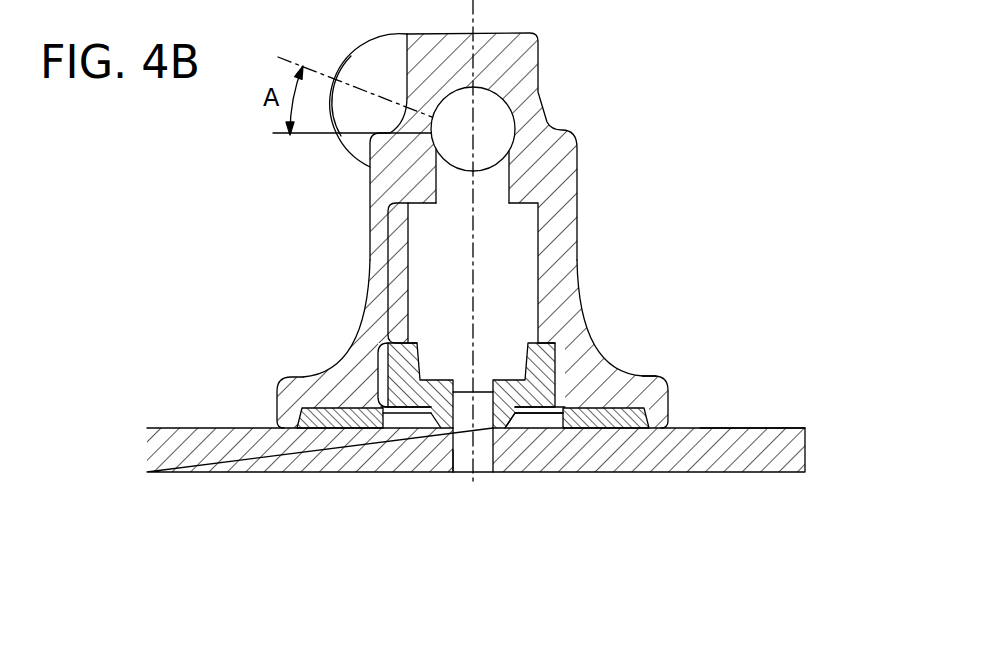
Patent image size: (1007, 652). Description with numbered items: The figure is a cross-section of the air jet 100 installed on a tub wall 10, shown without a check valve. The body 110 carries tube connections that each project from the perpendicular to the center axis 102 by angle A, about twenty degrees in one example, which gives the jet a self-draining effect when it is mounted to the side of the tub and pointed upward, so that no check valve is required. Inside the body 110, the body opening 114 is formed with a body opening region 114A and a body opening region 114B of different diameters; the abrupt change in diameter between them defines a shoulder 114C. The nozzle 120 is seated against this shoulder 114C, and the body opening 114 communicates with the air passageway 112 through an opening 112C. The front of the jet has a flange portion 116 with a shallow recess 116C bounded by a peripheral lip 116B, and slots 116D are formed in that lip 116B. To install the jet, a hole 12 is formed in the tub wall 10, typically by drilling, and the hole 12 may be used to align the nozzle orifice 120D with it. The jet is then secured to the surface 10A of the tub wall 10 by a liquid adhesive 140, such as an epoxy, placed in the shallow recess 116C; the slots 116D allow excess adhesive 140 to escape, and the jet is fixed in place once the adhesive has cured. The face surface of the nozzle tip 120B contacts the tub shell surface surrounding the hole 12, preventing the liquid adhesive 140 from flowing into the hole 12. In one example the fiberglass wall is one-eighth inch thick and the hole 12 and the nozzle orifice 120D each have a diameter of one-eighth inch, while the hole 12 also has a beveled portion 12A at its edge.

The air jet 100 is at (179, 218).
The body 110 is at (370, 200).
The air passageway 112 is at (492, 117).
The opening 112C is at (488, 183).
The body opening 114 is at (522, 273).
The body opening region 114A is at (385, 257).
The body opening region 114B is at (372, 388).
The shoulder 114C is at (548, 338).
The nozzle 120 is at (550, 357).
The nozzle tip 120B is at (425, 416).
The nozzle orifice 120D is at (480, 408).
The liquid adhesive 140 is at (618, 378).
The flange portion 116 is at (277, 402).
The peripheral lip 116B is at (668, 400).
The shallow recess 116C is at (634, 418).
The slots 116D is at (528, 416).
The center axis 102 is at (474, 225).
The tub wall 10 is at (170, 427).
The surface 10A is at (775, 428).
The hole 12 is at (478, 462).
The beveled portion 12A is at (462, 444).